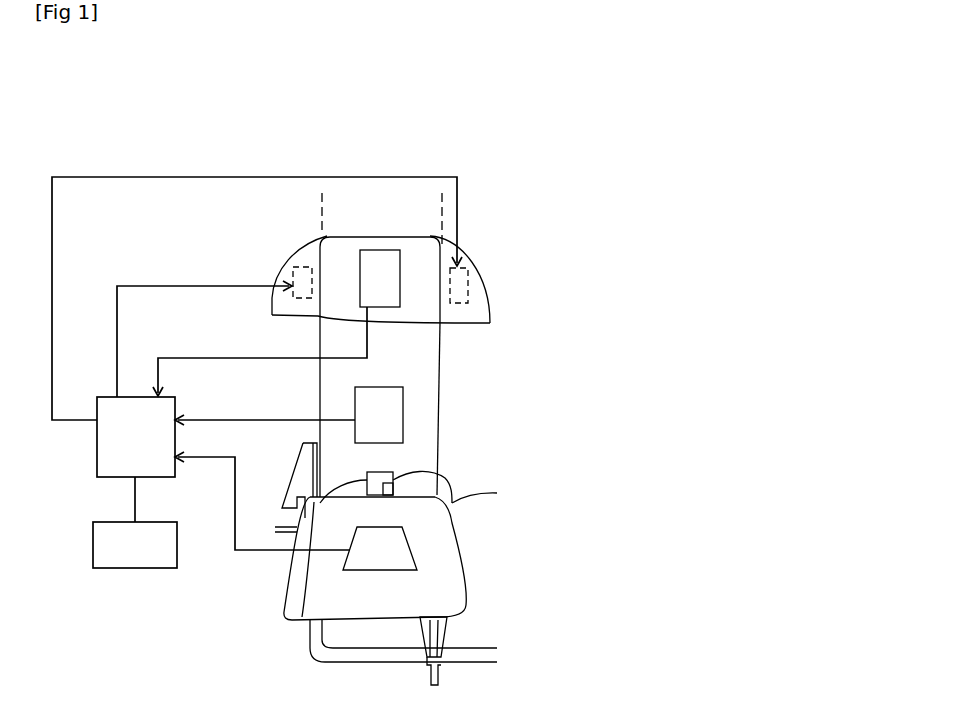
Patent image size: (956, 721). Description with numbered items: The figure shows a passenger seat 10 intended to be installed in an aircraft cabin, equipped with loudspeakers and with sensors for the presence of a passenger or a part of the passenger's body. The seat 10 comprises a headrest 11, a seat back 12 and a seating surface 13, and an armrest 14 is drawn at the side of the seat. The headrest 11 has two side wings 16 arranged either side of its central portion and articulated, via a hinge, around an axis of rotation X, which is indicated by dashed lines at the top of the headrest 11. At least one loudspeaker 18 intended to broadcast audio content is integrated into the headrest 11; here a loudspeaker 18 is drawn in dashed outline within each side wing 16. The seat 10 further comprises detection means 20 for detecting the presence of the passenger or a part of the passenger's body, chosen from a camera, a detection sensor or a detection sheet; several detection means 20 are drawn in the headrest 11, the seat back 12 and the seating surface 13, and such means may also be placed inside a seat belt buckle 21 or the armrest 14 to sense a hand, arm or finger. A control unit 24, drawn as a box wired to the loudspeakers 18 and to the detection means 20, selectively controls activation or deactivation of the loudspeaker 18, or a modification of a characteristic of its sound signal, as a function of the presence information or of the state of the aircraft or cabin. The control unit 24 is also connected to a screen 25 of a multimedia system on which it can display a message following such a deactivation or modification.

The passenger seat 10 is at (552, 192).
The headrest 11 is at (343, 252).
The seat back 12 is at (418, 372).
The seating surface 13 is at (437, 567).
The armrest 14 is at (293, 507).
The side wings 16 is at (313, 245).
The loudspeaker 18 is at (290, 263).
The detection means 20 is at (388, 268).
The seat belt buckle 21 is at (320, 503).
The control unit 24 is at (136, 437).
The screen 25 is at (135, 522).
The axis of rotation X is at (322, 198).